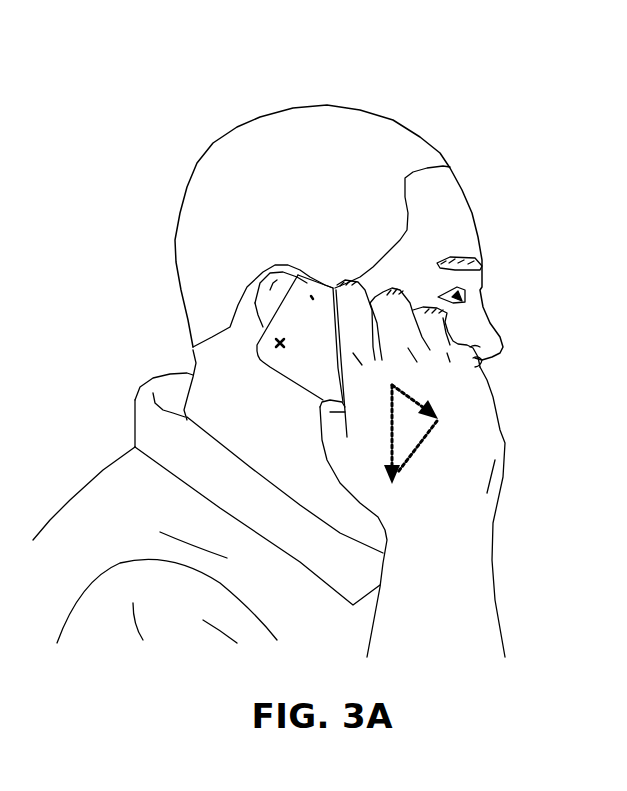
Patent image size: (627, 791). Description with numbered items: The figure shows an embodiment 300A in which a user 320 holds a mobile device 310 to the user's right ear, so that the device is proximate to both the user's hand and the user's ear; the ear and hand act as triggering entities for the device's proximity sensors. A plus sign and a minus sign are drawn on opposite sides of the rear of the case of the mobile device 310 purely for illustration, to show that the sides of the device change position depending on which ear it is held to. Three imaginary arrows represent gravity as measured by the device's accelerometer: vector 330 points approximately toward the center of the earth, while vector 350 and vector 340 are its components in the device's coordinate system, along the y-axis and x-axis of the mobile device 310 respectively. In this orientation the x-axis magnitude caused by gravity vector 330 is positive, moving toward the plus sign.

The embodiment 300A is at (182, 95).
The user 320 is at (331, 106).
The mobile device 310 is at (258, 360).
The vector 330 is at (390, 437).
The vector 340 is at (428, 427).
The vector 350 is at (413, 402).